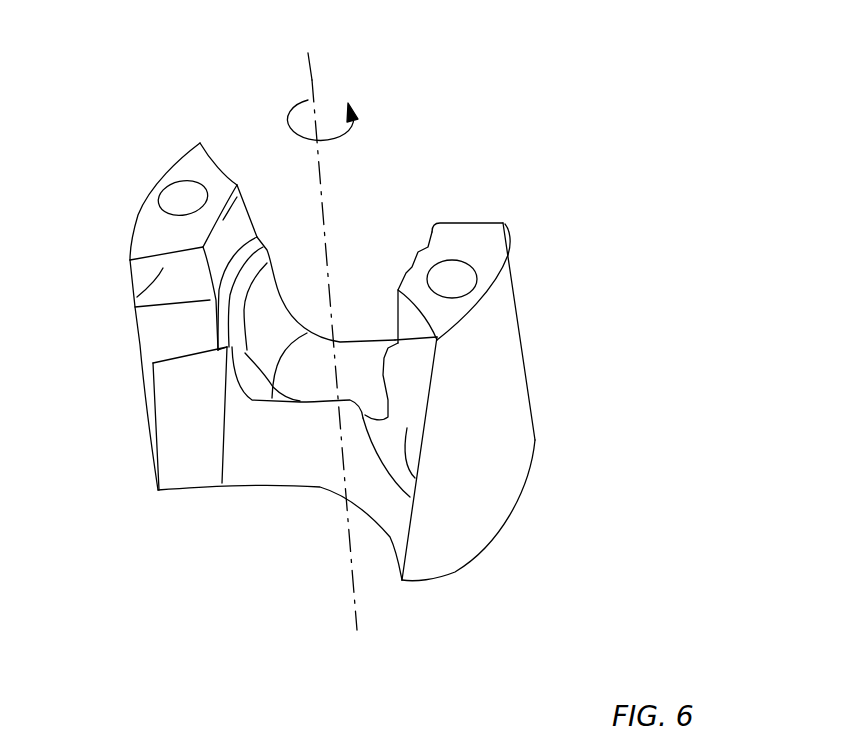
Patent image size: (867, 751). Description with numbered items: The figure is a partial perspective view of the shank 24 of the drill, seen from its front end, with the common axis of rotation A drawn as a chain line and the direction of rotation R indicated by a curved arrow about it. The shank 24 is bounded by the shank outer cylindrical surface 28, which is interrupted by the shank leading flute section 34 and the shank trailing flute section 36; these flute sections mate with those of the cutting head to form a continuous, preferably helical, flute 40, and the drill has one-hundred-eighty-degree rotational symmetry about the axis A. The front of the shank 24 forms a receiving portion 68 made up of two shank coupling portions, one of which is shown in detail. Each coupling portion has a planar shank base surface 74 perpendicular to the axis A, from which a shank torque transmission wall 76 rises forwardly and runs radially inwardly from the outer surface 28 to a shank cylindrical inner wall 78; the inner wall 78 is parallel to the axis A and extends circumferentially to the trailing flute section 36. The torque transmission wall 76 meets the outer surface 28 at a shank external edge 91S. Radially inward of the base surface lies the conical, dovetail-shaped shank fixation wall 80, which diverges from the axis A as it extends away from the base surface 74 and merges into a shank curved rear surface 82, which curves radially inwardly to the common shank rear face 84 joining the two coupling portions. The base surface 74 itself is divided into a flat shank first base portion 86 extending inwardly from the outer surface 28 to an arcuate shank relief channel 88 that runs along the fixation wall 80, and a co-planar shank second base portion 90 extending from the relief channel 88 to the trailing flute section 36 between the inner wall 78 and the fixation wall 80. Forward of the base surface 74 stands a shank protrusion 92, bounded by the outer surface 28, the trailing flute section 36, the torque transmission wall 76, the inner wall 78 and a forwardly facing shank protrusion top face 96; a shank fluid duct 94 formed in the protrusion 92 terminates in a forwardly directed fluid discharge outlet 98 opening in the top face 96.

The shank 24 is at (513, 150).
The shank outer cylindrical surface 28 is at (500, 430).
The shank leading flute section 34 is at (172, 376).
The shank trailing flute section 36 is at (415, 478).
The shank flute 40 is at (290, 442).
The receiving portion 68 is at (410, 497).
The shank base surface 74 is at (143, 342).
The shank torque transmission wall 76 is at (137, 297).
The shank cylindrical inner wall 78 is at (243, 212).
The shank fixation wall 80 is at (275, 292).
The shank curved rear surface 82 is at (278, 325).
The shank rear face 84 is at (372, 389).
The shank first base portion 86 is at (175, 338).
The shank relief channel 88 is at (222, 483).
The shank second base portion 90 is at (257, 220).
The shank external edge 91S is at (130, 272).
The shank protrusion 92 is at (497, 223).
The shank fluid duct 94 is at (434, 300).
The shank protrusion top face 96 is at (500, 240).
The fluid discharge outlet 98 is at (478, 287).
The axis of rotation A is at (312, 78).
The direction of rotation R is at (332, 110).